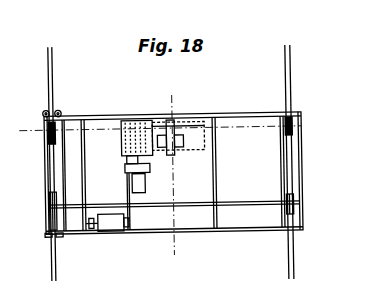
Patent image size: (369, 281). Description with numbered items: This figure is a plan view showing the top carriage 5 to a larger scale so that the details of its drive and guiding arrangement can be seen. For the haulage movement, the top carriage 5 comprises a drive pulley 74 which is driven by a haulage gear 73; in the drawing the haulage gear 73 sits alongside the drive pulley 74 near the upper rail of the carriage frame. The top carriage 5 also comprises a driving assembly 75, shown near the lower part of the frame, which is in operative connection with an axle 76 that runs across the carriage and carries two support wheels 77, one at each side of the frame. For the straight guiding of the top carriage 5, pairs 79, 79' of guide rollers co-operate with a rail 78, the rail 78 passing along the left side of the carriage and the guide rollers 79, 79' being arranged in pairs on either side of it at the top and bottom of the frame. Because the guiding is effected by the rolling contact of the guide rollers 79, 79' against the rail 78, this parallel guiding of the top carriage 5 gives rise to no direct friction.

The top carriage 5 is at (232, 112).
The haulage gear 73 is at (128, 120).
The drive pulley 74 is at (170, 120).
The driving assembly 75 is at (112, 232).
The axle 76 is at (190, 200).
The support wheels 77 is at (50, 132).
The rail 78 is at (55, 65).
The guide rollers 79 is at (37, 179).
The guide rollers 79' is at (75, 179).